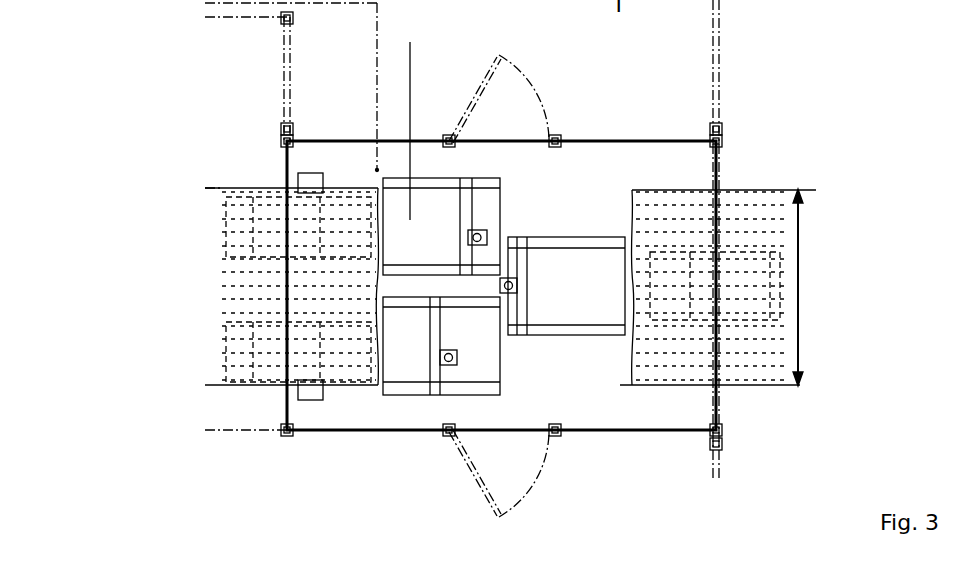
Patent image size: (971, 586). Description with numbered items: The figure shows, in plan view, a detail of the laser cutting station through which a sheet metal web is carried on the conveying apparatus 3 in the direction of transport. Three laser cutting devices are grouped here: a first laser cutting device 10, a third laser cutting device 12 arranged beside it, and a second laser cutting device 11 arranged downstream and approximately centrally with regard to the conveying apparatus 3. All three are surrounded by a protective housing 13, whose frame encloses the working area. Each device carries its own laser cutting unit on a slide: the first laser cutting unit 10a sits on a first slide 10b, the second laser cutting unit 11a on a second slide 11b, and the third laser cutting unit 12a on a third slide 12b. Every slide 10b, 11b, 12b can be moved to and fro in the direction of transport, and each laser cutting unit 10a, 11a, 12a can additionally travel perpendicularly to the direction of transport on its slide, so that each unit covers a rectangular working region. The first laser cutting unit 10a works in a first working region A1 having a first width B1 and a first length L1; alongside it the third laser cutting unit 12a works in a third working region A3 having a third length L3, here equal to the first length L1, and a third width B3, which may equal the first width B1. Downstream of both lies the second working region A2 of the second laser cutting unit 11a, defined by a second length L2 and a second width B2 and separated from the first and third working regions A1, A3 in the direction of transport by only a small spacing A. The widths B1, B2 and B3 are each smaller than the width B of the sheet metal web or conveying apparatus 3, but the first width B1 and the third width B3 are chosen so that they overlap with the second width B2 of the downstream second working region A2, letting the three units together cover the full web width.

The conveying apparatus 3 is at (757, 190).
The first laser cutting device 10 is at (382, 404).
The first laser cutting unit 10a is at (452, 360).
The first slide 10b is at (433, 378).
The second laser cutting device 11 is at (612, 221).
The second laser cutting unit 11a is at (510, 282).
The second slide 11b is at (520, 313).
The third laser cutting device 12 is at (395, 170).
The third laser cutting unit 12a is at (478, 235).
The third slide 12b is at (467, 200).
The protective housing 13 is at (643, 141).
The spacing A is at (502, 325).
The first working region A1 is at (417, 352).
The second working region A2 is at (572, 340).
The third working region A3 is at (410, 115).
The width of the sheet metal web or conveying apparatus B is at (808, 287).
The first width B1 is at (470, 343).
The second width B2 is at (572, 340).
The third width B3 is at (501, 223).
The first length L1 is at (441, 334).
The second length L2 is at (566, 269).
The third length L3 is at (441, 211).